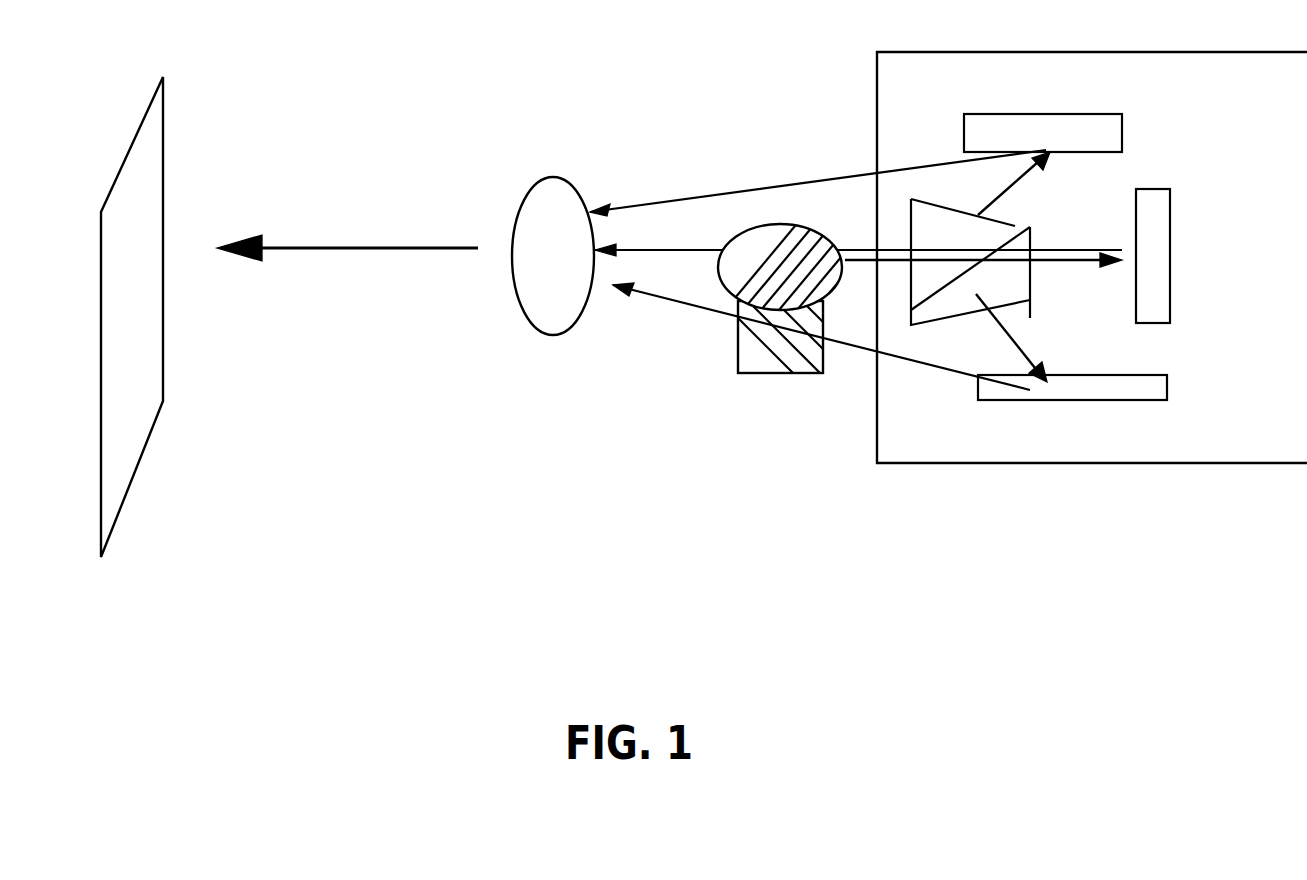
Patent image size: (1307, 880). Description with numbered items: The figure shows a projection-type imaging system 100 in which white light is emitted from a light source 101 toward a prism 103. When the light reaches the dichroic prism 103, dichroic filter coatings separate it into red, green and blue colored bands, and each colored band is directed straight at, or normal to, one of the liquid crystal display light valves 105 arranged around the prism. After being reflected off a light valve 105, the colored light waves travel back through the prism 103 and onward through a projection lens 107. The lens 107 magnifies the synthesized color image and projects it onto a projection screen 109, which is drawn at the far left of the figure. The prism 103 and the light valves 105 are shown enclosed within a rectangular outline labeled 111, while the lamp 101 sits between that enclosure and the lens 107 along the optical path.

The projection-type imaging system 100 is at (856, 603).
The light source 101 is at (790, 223).
The prism 103 is at (938, 204).
The liquid crystal display (LCD) light valve 105 is at (1077, 112).
The projection lens 107 is at (550, 177).
The projection screen 109 is at (120, 505).
The housing / optical engine 111 is at (1160, 463).